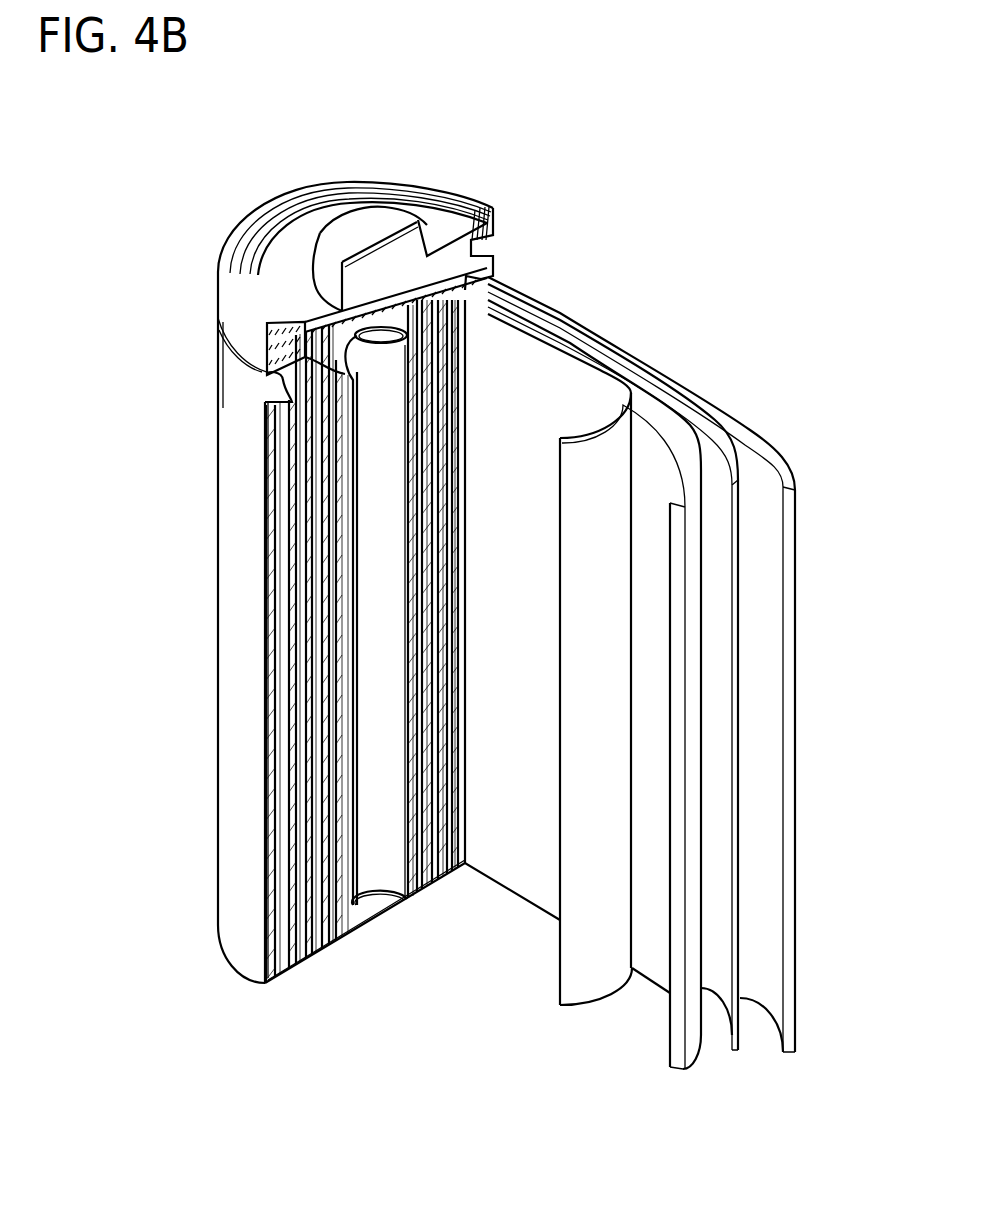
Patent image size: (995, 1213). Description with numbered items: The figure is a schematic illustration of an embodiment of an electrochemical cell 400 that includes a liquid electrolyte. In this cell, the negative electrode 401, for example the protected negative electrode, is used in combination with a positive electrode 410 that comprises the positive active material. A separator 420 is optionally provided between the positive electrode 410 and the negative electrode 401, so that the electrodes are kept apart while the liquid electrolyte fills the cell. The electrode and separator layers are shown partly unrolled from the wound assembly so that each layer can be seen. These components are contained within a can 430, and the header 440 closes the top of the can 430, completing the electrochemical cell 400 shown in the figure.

The electrochemical cell 400 is at (702, 207).
The negative electrode 401 is at (783, 460).
The positive electrode 410 is at (655, 412).
The separator 420 is at (567, 357).
The can 430 is at (232, 627).
The header 440 is at (355, 225).